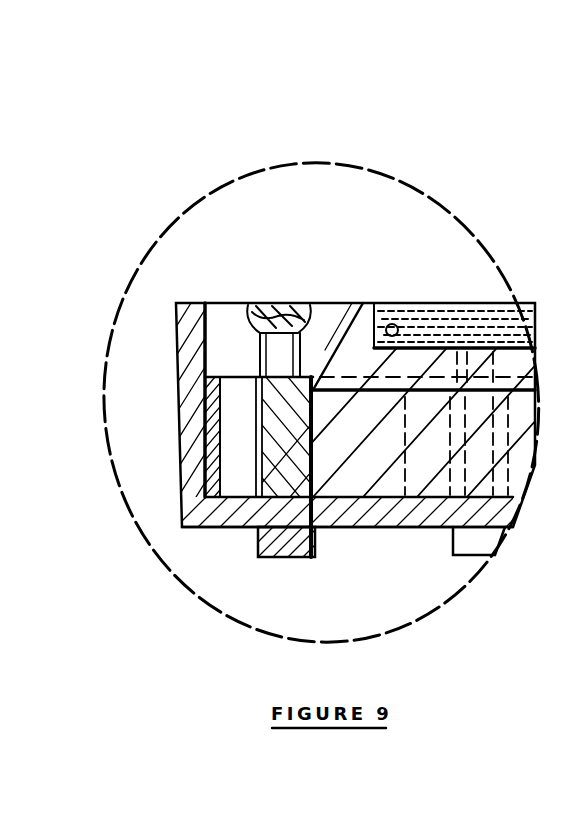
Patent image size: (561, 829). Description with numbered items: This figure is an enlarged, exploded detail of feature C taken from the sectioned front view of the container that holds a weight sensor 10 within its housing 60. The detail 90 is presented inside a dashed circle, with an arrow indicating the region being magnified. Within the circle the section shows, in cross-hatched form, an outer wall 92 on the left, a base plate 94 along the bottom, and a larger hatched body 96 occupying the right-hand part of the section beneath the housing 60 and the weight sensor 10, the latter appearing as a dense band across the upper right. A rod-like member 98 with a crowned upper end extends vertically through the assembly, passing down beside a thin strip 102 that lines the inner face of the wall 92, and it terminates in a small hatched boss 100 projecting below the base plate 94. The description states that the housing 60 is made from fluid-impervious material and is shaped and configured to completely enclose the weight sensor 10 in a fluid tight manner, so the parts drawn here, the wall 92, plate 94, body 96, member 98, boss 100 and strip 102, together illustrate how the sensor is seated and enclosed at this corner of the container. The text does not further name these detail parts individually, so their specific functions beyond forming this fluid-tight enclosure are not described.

The detail view of fastener assembly 90 is at (275, 117).
The housing wall 92 is at (190, 335).
The base plate 94 is at (240, 510).
The body block 96 is at (380, 450).
The fastener rod 98 is at (320, 332).
The lower boss 100 is at (300, 557).
The liner strip 102 is at (237, 450).
The housing 60 is at (363, 353).
The weight sensor 10 is at (457, 310).